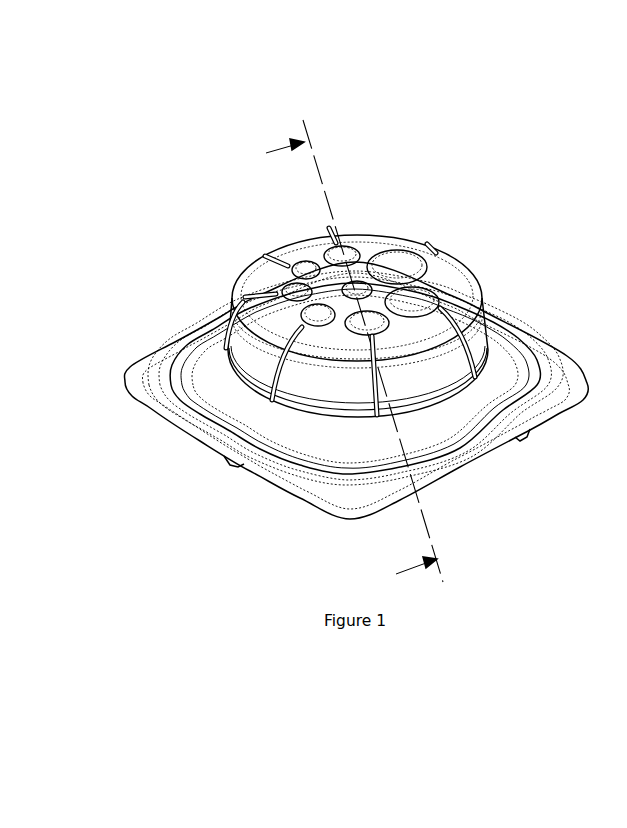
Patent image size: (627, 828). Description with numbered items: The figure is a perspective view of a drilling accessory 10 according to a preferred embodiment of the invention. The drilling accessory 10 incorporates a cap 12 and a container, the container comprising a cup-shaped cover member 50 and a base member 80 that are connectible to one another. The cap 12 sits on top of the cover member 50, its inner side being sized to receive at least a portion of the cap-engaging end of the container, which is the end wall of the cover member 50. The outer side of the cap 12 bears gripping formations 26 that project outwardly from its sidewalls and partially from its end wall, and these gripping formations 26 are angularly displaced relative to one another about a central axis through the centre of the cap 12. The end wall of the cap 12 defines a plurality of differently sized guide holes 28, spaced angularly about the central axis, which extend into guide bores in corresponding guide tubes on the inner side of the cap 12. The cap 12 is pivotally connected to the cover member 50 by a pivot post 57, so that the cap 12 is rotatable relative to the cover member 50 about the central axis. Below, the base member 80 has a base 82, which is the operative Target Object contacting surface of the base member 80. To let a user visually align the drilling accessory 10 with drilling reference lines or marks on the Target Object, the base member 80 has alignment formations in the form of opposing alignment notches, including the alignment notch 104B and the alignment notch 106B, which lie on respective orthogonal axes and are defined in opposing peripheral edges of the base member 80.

The drilling accessory 10 is at (167, 152).
The cap 12 is at (372, 243).
The gripping formations 26 is at (490, 321).
The guide holes 28 is at (403, 268).
The cover member 50 is at (207, 370).
The pivot post 57 is at (334, 260).
The base member 80 is at (192, 420).
The base 82 is at (347, 504).
The alignment notch 104B is at (231, 464).
The alignment notch 106B is at (526, 440).